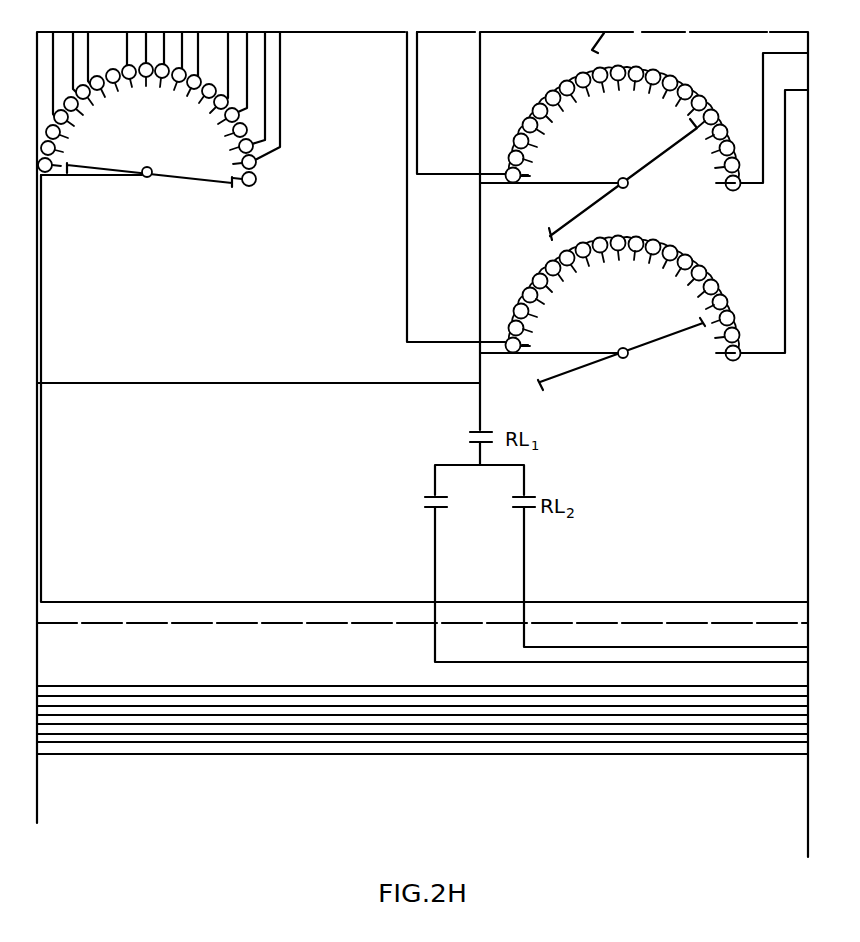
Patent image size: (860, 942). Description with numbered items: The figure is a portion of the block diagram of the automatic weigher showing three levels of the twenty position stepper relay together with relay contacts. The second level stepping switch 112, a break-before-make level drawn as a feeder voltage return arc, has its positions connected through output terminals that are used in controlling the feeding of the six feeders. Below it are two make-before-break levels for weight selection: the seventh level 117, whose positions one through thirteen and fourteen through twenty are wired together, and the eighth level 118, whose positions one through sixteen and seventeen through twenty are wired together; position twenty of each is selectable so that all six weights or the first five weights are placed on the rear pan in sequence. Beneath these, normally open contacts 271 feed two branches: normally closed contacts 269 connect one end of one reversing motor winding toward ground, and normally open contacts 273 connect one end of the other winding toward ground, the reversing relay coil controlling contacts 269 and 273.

The second level stepping switch 112 is at (159, 147).
The seventh level 117 is at (724, 102).
The eighth level 118 is at (725, 270).
The normally open contacts 271 is at (469, 436).
The normally closed contacts 269 is at (426, 503).
The normally open contacts 273 is at (538, 496).